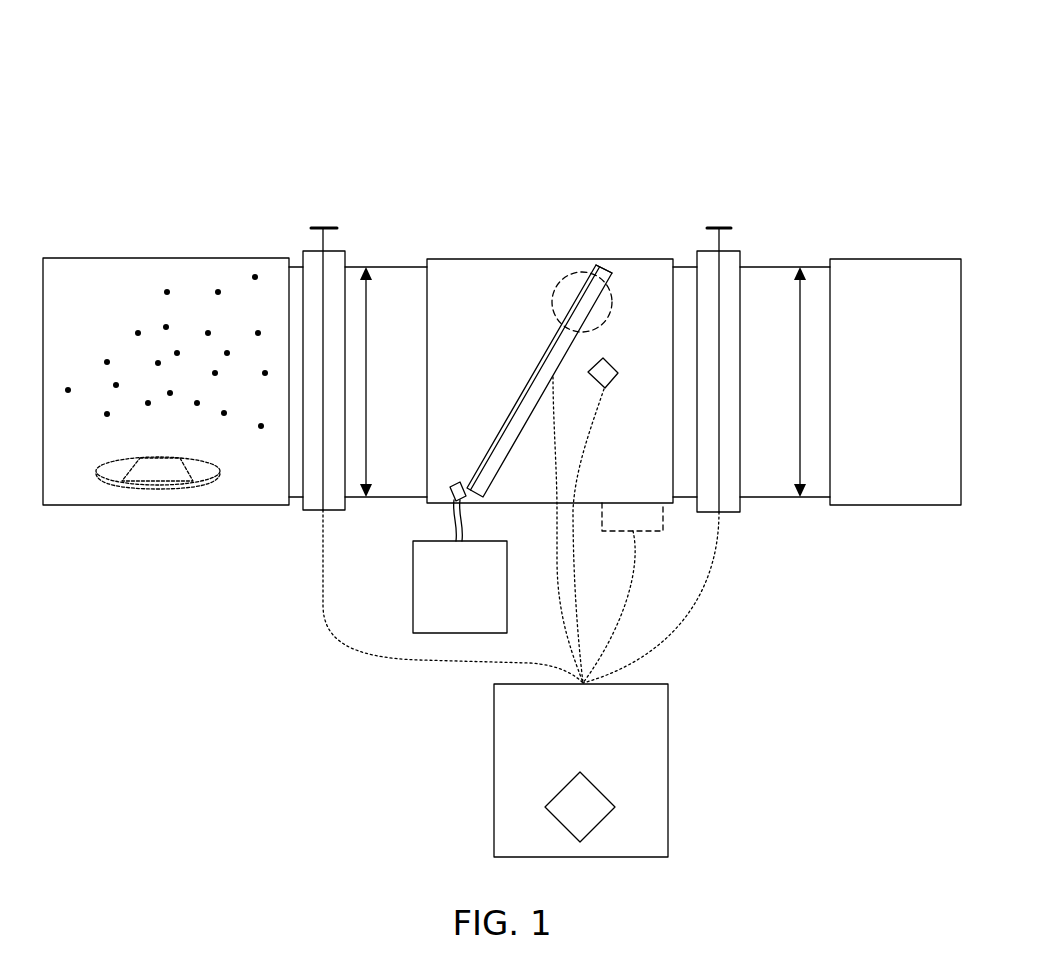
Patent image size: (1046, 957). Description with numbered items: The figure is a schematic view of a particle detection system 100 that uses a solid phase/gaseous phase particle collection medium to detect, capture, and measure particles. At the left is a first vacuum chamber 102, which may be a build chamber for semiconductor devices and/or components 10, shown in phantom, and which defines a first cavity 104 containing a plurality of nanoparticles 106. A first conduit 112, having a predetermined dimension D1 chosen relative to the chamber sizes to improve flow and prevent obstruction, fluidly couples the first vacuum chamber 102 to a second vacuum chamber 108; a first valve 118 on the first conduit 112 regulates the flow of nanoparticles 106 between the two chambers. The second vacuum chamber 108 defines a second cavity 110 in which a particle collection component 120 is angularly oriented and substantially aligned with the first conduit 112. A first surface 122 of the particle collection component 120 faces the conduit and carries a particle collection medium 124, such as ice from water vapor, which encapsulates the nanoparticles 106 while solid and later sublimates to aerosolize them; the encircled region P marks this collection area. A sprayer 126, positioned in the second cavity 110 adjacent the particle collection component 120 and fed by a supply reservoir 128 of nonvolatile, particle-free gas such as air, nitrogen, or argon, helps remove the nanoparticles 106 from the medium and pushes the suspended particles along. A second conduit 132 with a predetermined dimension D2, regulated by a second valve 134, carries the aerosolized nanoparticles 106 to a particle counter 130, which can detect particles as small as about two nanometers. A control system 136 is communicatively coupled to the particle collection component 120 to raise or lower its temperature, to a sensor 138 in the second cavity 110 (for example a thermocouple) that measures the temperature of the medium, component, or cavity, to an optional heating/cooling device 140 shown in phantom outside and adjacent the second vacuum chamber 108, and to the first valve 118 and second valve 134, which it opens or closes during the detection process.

The particle detection system 100 is at (469, 52).
The first vacuum chamber 102 is at (128, 258).
The first cavity 104 is at (76, 308).
The nanoparticles 106 is at (218, 288).
The semiconductor devices and/or components 10 is at (158, 488).
The first valve 118 is at (324, 227).
The first conduit 112 is at (398, 266).
The predetermined dimension of first conduit D1 is at (362, 419).
The second vacuum chamber 108 is at (493, 258).
The second cavity 110 is at (441, 308).
The particle collection component 120 is at (515, 447).
The first surface 122 is at (568, 298).
The particle collection medium 124 is at (591, 262).
The sampling point P is at (613, 302).
The sprayer 126 is at (451, 491).
The supply reservoir 128 is at (442, 598).
The sensor 138 is at (618, 380).
The heating/cooling device 140 is at (652, 531).
The second valve 134 is at (718, 227).
The second conduit 132 is at (783, 497).
The predetermined dimension of second conduit D2 is at (803, 352).
The particle counter 130 is at (912, 505).
The control system 136 is at (563, 755).